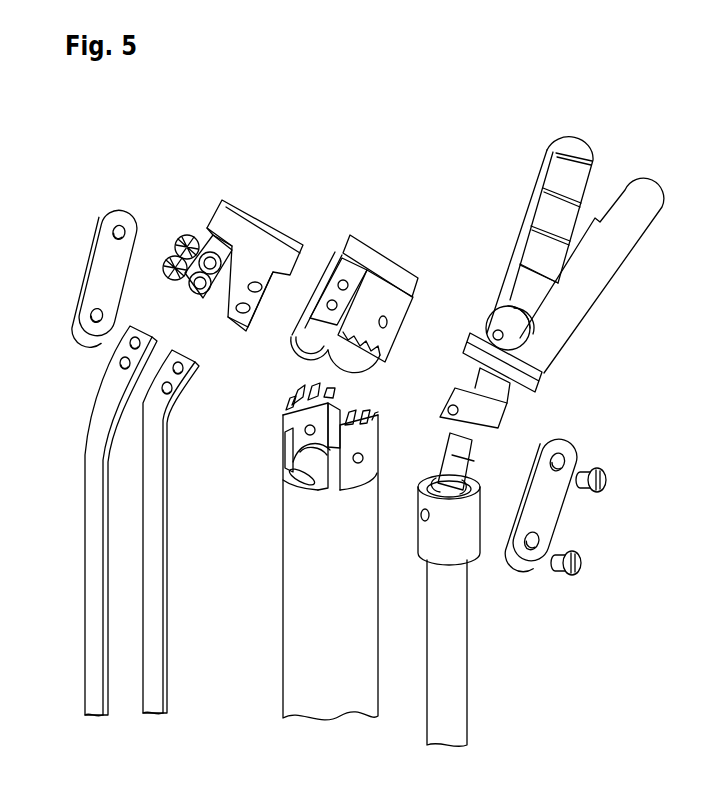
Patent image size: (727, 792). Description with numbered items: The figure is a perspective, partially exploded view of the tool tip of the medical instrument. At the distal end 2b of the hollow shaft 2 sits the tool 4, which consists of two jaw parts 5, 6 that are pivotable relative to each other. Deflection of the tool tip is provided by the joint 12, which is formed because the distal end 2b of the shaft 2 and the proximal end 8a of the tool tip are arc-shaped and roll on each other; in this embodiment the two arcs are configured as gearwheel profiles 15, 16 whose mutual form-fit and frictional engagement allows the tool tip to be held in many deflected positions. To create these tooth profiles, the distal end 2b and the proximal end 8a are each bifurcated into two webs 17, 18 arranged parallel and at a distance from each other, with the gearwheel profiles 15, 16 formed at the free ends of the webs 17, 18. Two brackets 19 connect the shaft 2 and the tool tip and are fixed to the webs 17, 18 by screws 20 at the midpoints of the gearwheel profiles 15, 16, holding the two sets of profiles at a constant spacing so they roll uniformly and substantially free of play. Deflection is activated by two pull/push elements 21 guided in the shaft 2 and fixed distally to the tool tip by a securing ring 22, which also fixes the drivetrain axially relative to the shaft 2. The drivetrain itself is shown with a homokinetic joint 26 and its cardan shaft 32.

The hollow shaft 2 is at (303, 614).
The distal end of the shaft 2b is at (262, 508).
The tool 4 is at (582, 234).
The jaw part 5 is at (632, 240).
The jaw part 6 is at (563, 164).
The proximal end of the tool tip 8a is at (383, 262).
The joint 12 is at (283, 413).
The gearwheel profile 15 is at (299, 399).
The gearwheel profile 16 is at (385, 372).
The web 17 is at (282, 448).
The web 18 is at (326, 255).
The bracket 19 is at (100, 265).
The screw 20 is at (608, 481).
The pull/push element 21 is at (97, 547).
The securing ring 22 is at (257, 235).
The homokinetic joint 26 is at (519, 418).
The cardan shaft 32 is at (463, 458).